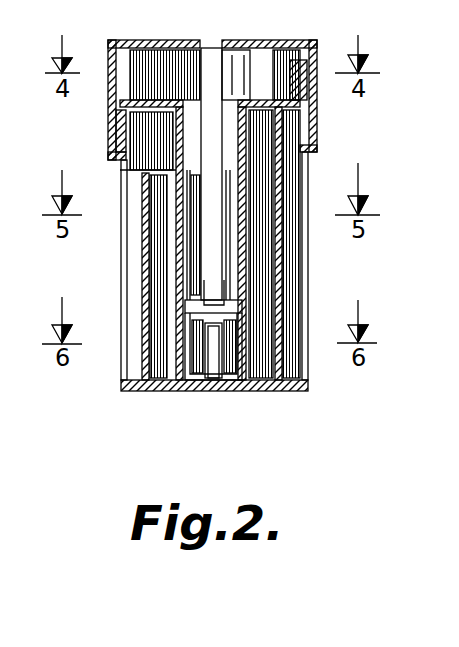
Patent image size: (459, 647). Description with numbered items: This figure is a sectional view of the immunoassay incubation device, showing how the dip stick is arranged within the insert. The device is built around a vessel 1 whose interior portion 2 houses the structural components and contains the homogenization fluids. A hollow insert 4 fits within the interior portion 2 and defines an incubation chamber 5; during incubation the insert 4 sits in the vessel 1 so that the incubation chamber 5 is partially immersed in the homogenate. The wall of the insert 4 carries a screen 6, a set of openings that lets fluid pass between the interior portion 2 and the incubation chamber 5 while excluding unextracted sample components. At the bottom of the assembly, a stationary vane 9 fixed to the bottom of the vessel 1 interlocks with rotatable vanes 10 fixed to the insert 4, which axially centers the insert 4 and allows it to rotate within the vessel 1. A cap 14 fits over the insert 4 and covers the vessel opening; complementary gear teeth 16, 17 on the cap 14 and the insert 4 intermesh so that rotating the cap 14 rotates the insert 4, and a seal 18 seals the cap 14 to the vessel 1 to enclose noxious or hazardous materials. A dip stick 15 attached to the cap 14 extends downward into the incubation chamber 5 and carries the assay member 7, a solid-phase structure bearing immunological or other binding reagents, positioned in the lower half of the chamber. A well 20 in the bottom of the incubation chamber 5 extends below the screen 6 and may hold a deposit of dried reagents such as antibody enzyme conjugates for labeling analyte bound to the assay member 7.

The vessel 1 is at (285, 360).
The interior portion 2 is at (165, 346).
The insert 4 is at (172, 237).
The incubation chamber 5 is at (238, 198).
The screen 6 is at (207, 263).
The assay member 7 is at (212, 283).
The stationary vane 9 is at (213, 368).
The rotatable vanes 10 is at (195, 368).
The cap 14 is at (143, 43).
The dip stick 15 is at (173, 47).
The gear teeth 16 is at (303, 80).
The gear teeth 17 is at (283, 43).
The seal 18 is at (143, 137).
The well 20 is at (182, 302).